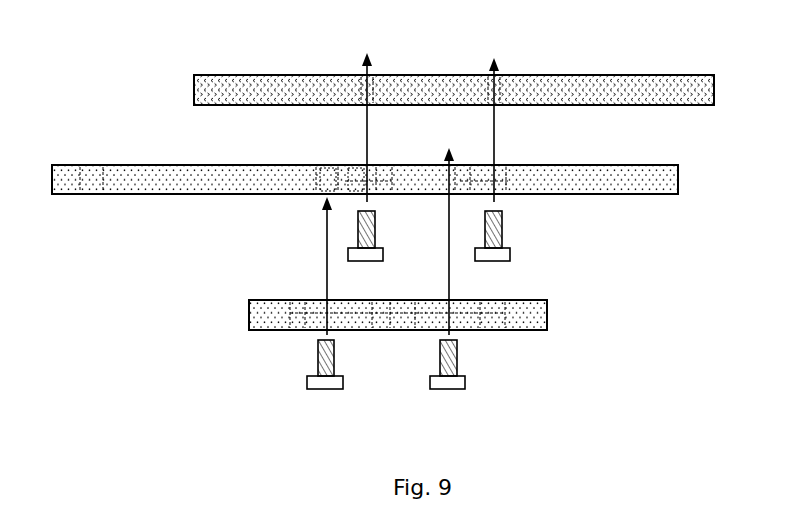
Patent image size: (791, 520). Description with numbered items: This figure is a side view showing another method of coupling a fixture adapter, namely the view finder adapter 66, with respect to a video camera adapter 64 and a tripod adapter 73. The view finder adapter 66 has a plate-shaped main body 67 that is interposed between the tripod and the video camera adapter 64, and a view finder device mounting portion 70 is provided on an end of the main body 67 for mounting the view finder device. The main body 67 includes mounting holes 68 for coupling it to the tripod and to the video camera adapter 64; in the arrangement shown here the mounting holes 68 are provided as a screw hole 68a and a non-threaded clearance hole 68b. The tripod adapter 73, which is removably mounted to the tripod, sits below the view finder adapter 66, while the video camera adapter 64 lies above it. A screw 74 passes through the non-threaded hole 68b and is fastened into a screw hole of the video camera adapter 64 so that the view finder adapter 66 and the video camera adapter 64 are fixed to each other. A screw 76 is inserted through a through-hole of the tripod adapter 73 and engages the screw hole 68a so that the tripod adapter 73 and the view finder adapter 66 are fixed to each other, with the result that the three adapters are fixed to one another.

The video camera adapter 64 is at (679, 80).
The view finder adapter 66 is at (416, 173).
The main body 67 is at (137, 183).
The mounting hole 68 is at (299, 154).
The screw hole 68a is at (327, 157).
The non-threaded hole 68b is at (356, 151).
The view finder device mounting portion 70 is at (409, 160).
The tripod adapter 73 is at (532, 330).
The screw 74 is at (497, 255).
The screw 76 is at (448, 385).